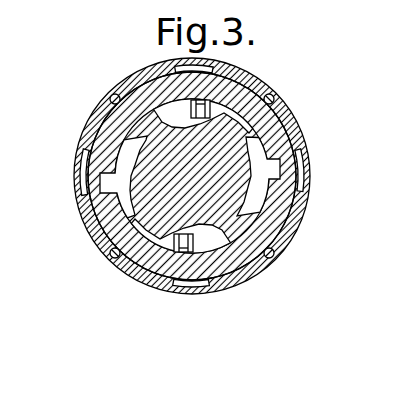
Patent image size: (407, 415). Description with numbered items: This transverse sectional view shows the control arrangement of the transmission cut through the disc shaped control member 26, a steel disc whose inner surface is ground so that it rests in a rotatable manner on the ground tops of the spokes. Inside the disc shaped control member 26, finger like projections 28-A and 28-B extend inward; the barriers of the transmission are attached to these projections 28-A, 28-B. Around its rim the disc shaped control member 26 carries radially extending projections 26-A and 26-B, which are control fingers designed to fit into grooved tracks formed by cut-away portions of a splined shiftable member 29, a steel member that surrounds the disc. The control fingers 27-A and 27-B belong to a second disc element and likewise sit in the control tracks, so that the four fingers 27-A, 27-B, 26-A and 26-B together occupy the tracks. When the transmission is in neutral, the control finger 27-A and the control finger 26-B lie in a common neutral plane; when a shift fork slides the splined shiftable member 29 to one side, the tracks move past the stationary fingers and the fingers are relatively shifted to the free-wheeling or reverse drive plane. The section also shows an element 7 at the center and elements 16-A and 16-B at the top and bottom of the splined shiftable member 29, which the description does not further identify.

The rotor 7 is at (170, 210).
The vane slot 16-A is at (222, 77).
The vane slot 16-B is at (177, 282).
The disc shaped control member 26 is at (275, 131).
The radially extending projection 26-A is at (112, 97).
The radially extending projection 26-B is at (270, 258).
The control finger 27-A is at (271, 100).
The control finger 27-B is at (117, 254).
The finger like projection 28-A is at (126, 178).
The finger like projection 28-B is at (262, 160).
The splined shiftable member 29 is at (290, 227).